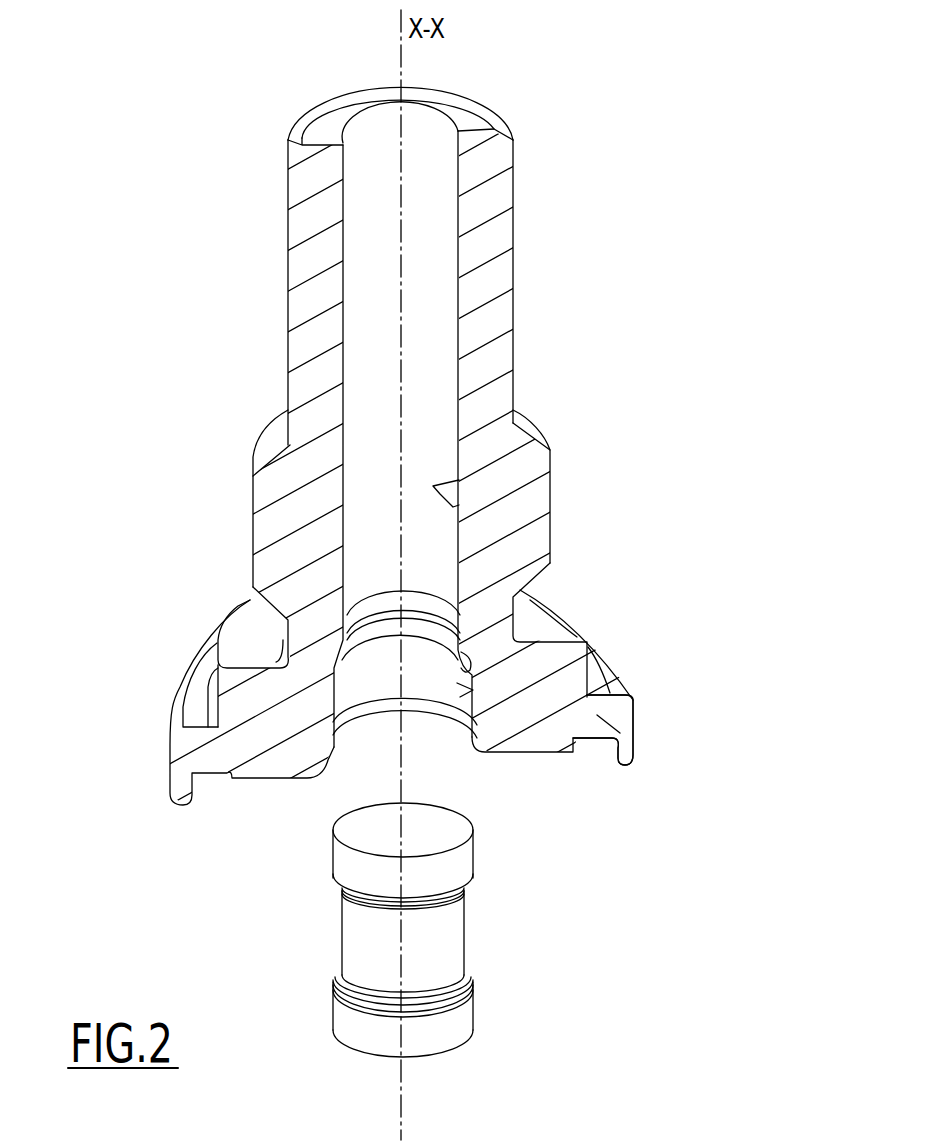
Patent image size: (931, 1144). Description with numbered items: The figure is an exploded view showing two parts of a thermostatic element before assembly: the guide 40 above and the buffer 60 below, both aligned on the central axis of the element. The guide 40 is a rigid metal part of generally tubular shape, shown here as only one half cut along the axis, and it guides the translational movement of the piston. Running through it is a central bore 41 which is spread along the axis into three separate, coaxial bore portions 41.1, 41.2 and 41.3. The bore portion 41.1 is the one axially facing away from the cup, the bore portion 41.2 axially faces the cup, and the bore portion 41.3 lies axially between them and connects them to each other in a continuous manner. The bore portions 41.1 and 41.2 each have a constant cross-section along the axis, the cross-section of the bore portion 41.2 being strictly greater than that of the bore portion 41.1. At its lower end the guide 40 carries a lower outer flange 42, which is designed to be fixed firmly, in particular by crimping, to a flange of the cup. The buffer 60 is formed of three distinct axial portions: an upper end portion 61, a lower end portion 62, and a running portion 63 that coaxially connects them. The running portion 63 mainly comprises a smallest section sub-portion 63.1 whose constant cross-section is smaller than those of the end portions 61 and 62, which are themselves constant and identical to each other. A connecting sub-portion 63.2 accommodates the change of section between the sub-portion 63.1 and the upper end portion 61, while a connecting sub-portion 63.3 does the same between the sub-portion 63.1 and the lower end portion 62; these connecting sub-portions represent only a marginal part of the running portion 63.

The guide 40 is at (268, 151).
The central bore 41 is at (707, 567).
The bore portion 41.1 is at (433, 485).
The bore portion 41.2 is at (588, 647).
The bore portion 41.3 is at (480, 655).
The lower outer flange 42 is at (595, 713).
The buffer 60 is at (423, 933).
The upper end portion 61 is at (457, 867).
The lower end portion 62 is at (457, 1020).
The running portion 63 is at (483, 935).
The smallest section sub-portion 63.1 is at (440, 934).
The connecting sub-portion 63.2 is at (453, 901).
The connecting sub-portion 63.3 is at (463, 985).